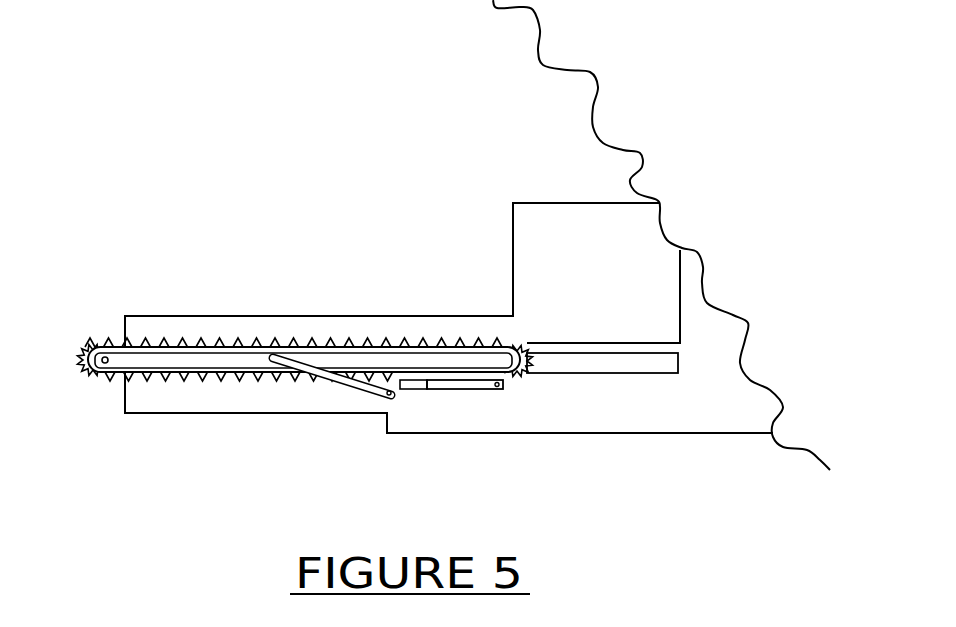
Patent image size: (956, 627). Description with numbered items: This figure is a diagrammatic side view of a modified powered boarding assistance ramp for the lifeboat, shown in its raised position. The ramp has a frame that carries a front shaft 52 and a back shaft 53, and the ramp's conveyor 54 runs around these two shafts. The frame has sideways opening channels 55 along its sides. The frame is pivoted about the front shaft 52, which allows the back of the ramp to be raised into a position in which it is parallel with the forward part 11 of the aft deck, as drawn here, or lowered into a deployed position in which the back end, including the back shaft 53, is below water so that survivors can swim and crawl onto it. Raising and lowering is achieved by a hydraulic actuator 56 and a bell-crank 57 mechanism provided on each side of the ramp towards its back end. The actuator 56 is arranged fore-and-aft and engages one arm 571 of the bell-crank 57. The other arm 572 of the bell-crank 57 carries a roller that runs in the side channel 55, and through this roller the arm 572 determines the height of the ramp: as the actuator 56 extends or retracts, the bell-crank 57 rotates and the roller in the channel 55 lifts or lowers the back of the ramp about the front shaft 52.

The forward part of the aft deck 11 is at (617, 342).
The front shaft 52 is at (502, 362).
The back shaft 53 is at (105, 357).
The conveyor 54 is at (222, 343).
The sideways opening channel 55 is at (183, 372).
The hydraulic actuator 56 is at (477, 390).
The bell-crank 57 is at (408, 428).
The arm of the bell-crank 571 is at (400, 390).
The other arm of the bell-crank 572 is at (322, 385).